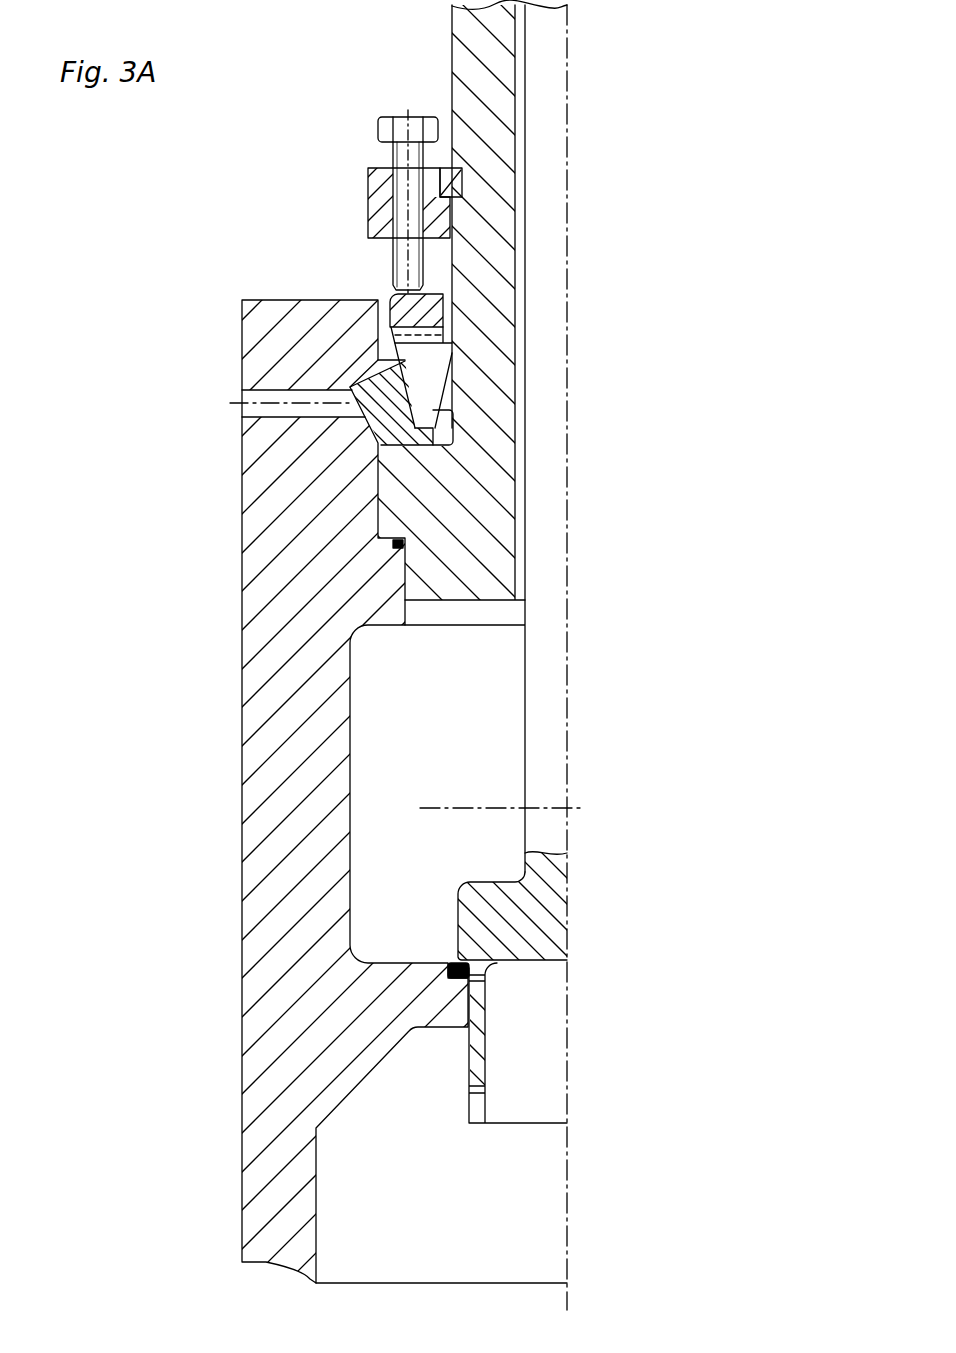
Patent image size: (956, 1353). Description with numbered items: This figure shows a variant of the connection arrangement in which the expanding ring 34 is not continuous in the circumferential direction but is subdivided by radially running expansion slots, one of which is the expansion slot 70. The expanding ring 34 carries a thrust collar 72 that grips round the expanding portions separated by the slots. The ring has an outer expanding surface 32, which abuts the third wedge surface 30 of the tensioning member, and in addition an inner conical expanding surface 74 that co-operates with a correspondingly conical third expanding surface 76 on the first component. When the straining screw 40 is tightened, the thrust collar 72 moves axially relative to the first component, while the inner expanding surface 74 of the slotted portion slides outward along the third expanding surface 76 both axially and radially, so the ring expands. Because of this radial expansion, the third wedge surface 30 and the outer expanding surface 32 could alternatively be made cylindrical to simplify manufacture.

The third wedge surface 30 is at (418, 433).
The outer expanding surface 32 is at (393, 398).
The expanding ring 34 is at (379, 292).
The straining screw 40 is at (400, 164).
The expansion slot 70 is at (428, 373).
The thrust collar 72 is at (430, 310).
The inner conical expanding surface 74 is at (440, 365).
The third expanding surface 76 is at (440, 363).